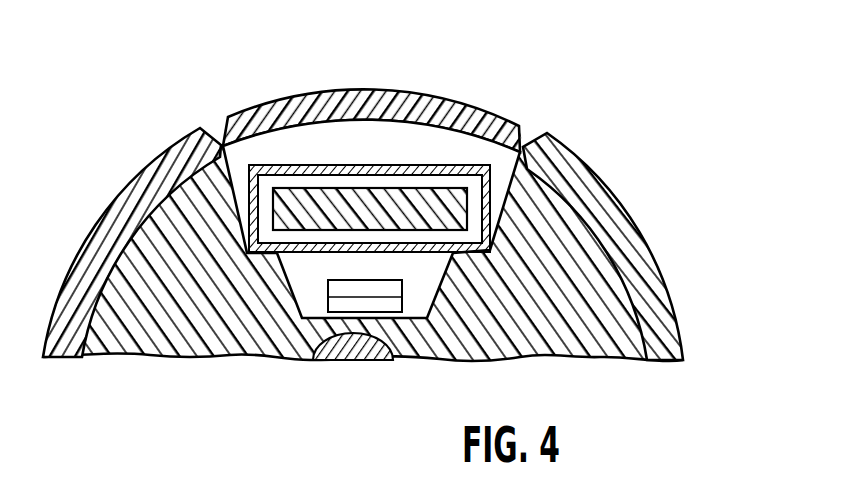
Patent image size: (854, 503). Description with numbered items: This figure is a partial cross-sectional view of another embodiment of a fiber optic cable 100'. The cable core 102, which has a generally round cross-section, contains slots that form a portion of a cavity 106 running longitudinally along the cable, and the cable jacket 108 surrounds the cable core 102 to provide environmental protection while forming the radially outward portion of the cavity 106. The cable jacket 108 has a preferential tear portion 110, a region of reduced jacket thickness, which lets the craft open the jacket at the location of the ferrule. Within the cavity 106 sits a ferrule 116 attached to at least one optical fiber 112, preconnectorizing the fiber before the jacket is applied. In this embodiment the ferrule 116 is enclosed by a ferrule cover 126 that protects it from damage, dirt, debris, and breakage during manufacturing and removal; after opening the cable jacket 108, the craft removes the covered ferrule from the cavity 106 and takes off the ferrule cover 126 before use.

The cable 100' is at (395, 224).
The cable core 102 is at (587, 333).
The cavity 106 is at (328, 142).
The cable jacket 108 is at (660, 257).
The preferential tear portion 110 is at (522, 127).
The optical fiber 112 is at (367, 296).
The ferrule 116 is at (400, 205).
The ferrule cover 126 is at (453, 170).